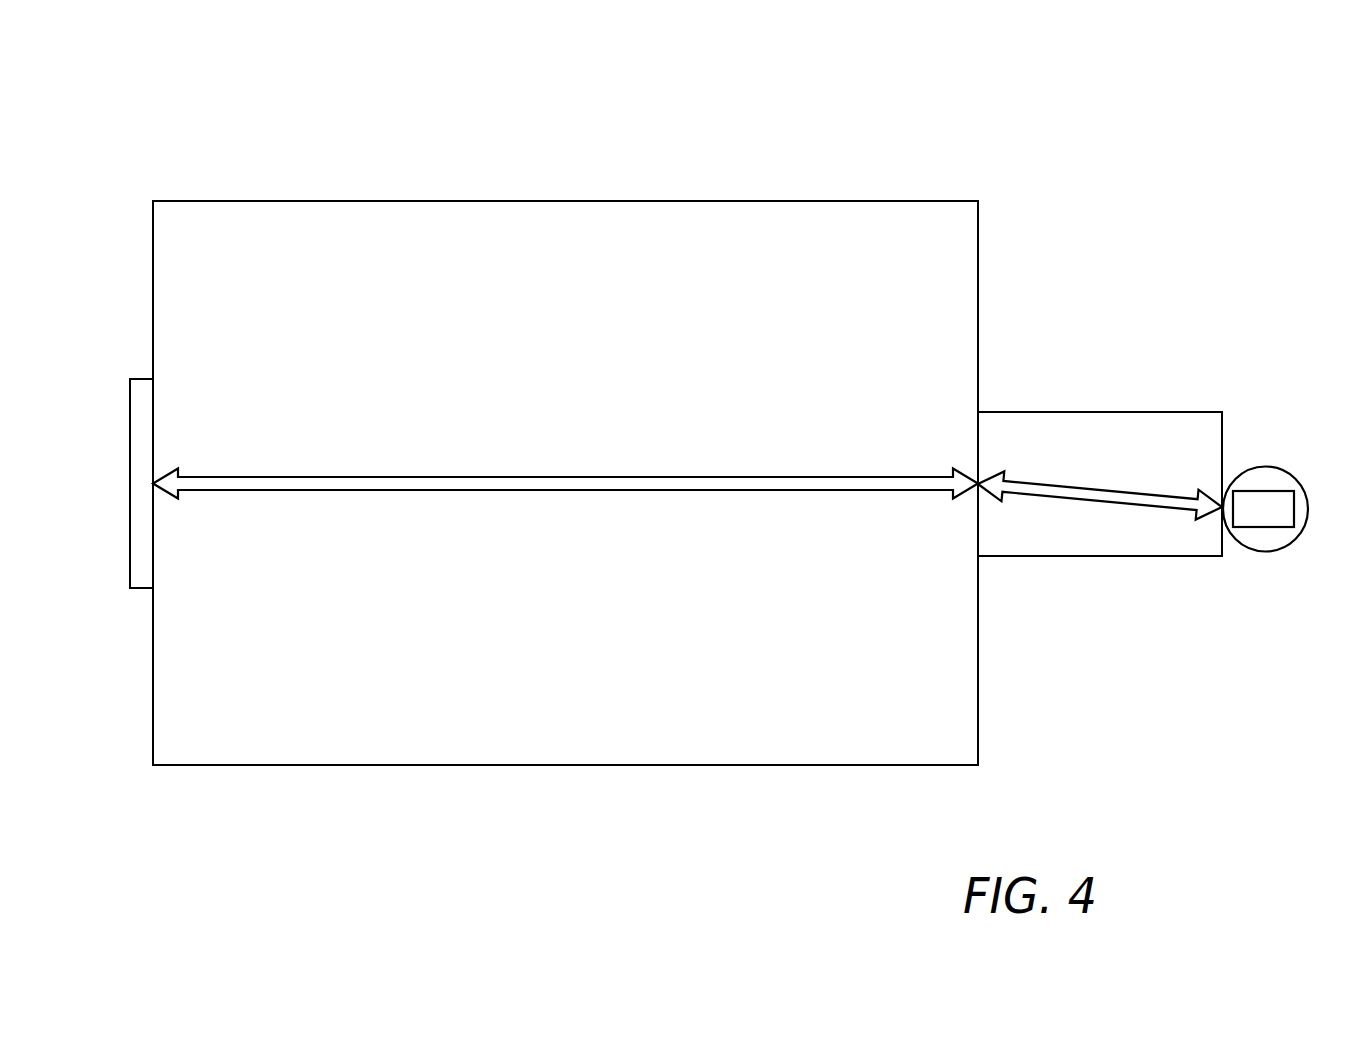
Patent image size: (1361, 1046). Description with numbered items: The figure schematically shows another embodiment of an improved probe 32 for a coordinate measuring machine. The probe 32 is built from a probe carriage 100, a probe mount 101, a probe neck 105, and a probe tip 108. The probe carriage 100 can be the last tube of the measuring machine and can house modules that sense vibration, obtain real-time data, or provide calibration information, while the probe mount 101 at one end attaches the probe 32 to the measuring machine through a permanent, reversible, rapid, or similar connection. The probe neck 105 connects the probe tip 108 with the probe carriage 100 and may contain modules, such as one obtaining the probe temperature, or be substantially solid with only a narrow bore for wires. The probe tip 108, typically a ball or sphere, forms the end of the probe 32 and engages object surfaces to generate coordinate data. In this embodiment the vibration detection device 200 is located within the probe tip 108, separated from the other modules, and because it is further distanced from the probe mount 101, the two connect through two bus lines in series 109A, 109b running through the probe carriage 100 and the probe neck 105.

The probe 32 is at (1160, 114).
The probe carriage 100 is at (765, 201).
The probe mount 101 is at (130, 427).
The probe neck 105 is at (1150, 412).
The probe tip 108 is at (1263, 551).
The bus line 109A is at (554, 477).
The bus line 109b is at (1077, 483).
The vibration detection device 200 is at (1263, 491).